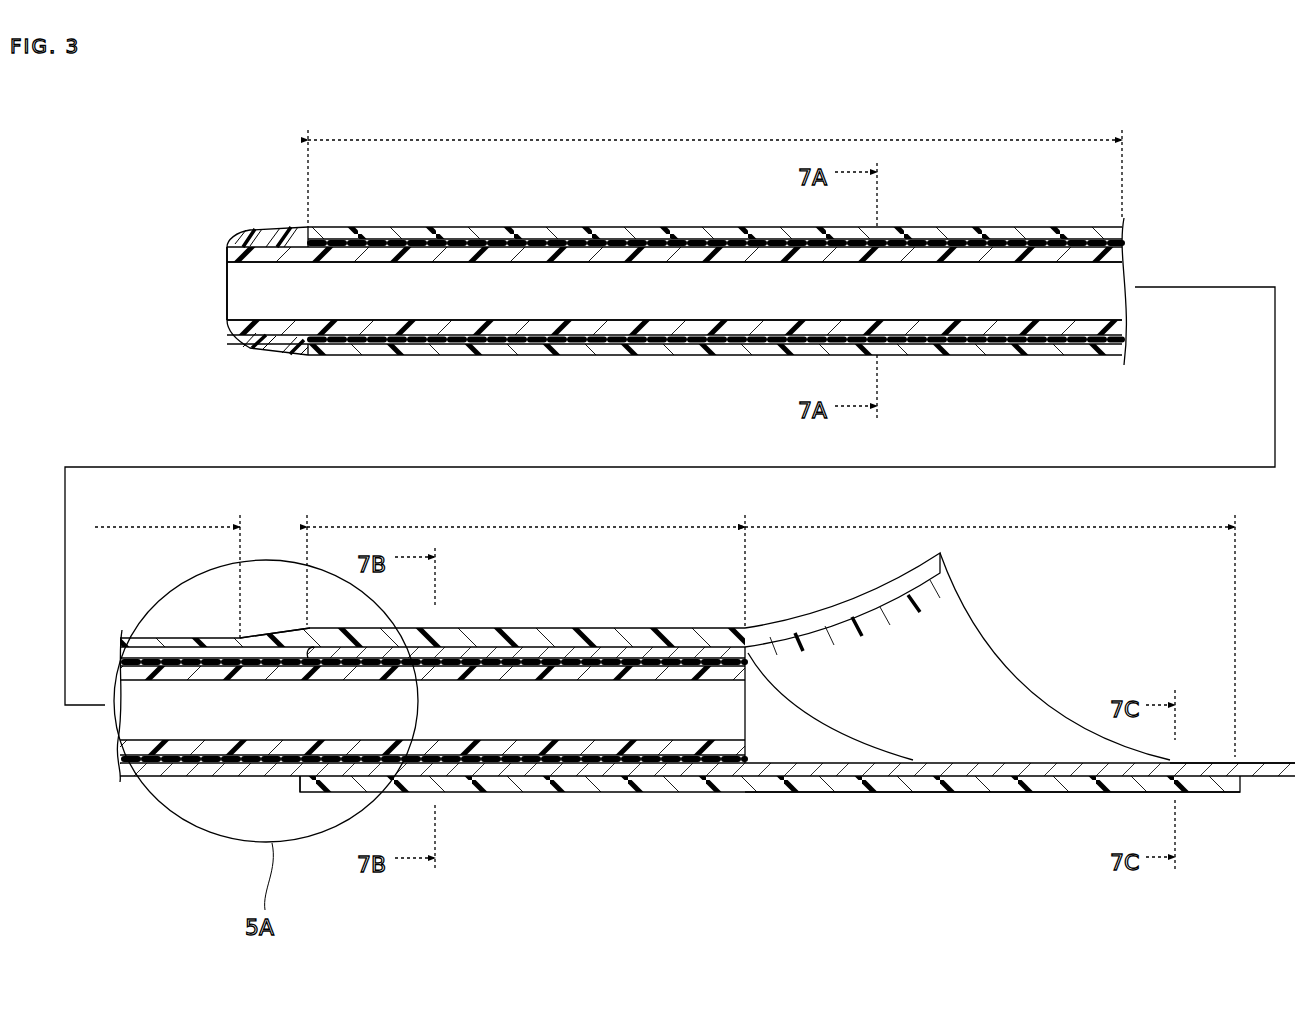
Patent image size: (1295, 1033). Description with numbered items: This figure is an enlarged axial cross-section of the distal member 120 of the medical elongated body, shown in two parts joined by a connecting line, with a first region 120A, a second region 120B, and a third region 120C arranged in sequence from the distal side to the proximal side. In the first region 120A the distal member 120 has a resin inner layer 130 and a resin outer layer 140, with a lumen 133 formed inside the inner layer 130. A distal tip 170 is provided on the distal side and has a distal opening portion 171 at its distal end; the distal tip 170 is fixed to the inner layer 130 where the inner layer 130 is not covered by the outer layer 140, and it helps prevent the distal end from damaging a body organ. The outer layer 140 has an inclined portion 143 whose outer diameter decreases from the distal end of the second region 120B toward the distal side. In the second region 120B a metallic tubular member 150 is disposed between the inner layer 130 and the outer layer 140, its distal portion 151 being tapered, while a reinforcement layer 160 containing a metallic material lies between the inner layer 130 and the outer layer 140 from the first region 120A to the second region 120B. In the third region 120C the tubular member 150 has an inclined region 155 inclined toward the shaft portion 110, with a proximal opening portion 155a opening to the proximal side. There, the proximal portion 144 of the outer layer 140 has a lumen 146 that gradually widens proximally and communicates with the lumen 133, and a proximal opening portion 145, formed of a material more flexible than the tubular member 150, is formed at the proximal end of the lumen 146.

The distal member 120 is at (122, 132).
The first region 120A is at (608, 376).
The second region 120B is at (526, 563).
The third region 120C is at (990, 627).
The shaft portion 110 is at (897, 785).
The inner layer 130 is at (526, 255).
The lumen 133 is at (423, 273).
The outer layer 140 is at (696, 233).
The inclined portion 143 is at (285, 628).
The proximal portion 144 is at (934, 574).
The proximal opening portion 145 is at (1060, 700).
The lumen 146 is at (905, 690).
The tubular member 150 is at (583, 653).
The distal portion 151 is at (297, 790).
The inclined region 155 is at (727, 793).
The proximal opening portion 155a is at (817, 713).
The reinforcement layer 160 is at (624, 243).
The distal tip 170 is at (262, 237).
The distal opening portion 171 is at (226, 292).